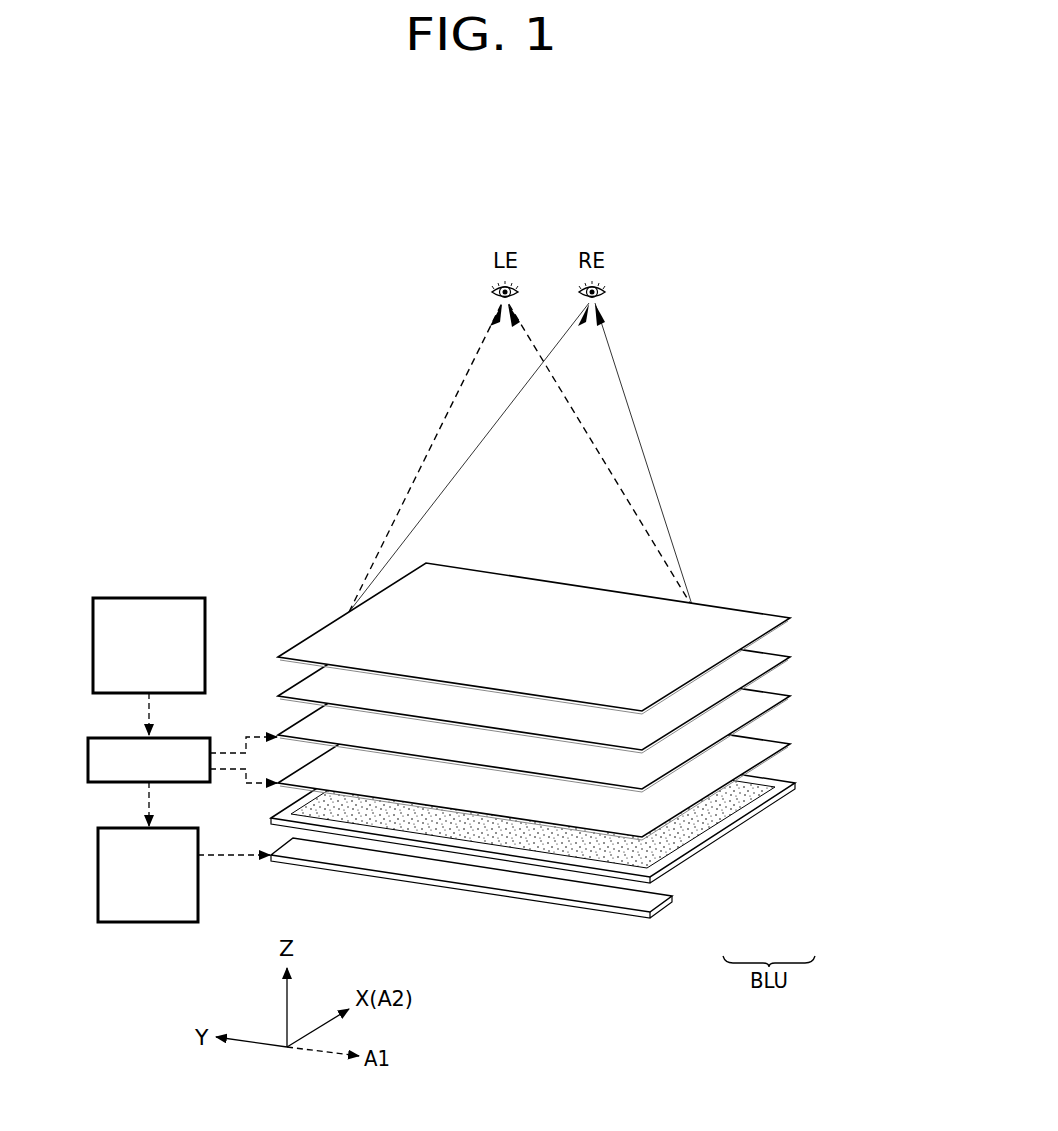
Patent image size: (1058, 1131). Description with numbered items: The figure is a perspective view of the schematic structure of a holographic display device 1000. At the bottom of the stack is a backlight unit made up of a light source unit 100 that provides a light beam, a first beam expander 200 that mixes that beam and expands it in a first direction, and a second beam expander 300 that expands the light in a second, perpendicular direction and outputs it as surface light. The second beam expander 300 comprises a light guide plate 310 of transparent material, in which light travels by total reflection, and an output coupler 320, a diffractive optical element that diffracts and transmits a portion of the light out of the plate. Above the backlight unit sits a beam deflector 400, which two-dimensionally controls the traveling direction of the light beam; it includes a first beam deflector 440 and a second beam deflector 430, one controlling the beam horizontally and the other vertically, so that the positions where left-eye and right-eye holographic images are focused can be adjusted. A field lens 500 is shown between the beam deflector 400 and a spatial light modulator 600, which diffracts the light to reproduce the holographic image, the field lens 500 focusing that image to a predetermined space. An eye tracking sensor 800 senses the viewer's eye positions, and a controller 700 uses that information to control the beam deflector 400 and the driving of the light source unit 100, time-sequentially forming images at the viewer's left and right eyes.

The holographic display device 1000 is at (787, 345).
The light source unit 100 is at (200, 921).
The first beam expander 200 is at (665, 907).
The second beam expander 300 is at (564, 837).
The light guide plate 310 is at (712, 833).
The output coupler 320 is at (745, 797).
The beam deflector 400 is at (860, 668).
The second beam deflector 430 is at (790, 696).
The first beam deflector 440 is at (790, 744).
The field lens 500 is at (790, 657).
The spatial light modulator 600 is at (790, 618).
The controller 700 is at (212, 775).
The eye tracking sensor 800 is at (208, 613).